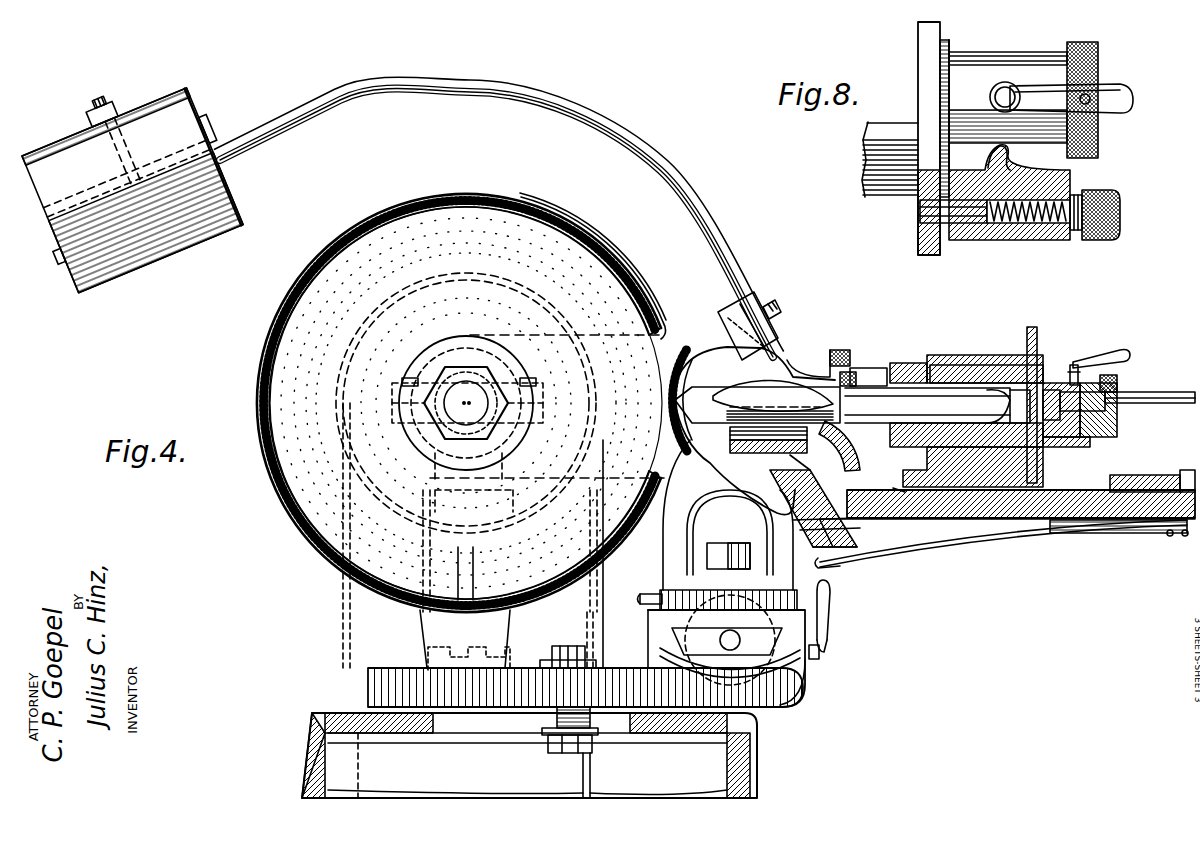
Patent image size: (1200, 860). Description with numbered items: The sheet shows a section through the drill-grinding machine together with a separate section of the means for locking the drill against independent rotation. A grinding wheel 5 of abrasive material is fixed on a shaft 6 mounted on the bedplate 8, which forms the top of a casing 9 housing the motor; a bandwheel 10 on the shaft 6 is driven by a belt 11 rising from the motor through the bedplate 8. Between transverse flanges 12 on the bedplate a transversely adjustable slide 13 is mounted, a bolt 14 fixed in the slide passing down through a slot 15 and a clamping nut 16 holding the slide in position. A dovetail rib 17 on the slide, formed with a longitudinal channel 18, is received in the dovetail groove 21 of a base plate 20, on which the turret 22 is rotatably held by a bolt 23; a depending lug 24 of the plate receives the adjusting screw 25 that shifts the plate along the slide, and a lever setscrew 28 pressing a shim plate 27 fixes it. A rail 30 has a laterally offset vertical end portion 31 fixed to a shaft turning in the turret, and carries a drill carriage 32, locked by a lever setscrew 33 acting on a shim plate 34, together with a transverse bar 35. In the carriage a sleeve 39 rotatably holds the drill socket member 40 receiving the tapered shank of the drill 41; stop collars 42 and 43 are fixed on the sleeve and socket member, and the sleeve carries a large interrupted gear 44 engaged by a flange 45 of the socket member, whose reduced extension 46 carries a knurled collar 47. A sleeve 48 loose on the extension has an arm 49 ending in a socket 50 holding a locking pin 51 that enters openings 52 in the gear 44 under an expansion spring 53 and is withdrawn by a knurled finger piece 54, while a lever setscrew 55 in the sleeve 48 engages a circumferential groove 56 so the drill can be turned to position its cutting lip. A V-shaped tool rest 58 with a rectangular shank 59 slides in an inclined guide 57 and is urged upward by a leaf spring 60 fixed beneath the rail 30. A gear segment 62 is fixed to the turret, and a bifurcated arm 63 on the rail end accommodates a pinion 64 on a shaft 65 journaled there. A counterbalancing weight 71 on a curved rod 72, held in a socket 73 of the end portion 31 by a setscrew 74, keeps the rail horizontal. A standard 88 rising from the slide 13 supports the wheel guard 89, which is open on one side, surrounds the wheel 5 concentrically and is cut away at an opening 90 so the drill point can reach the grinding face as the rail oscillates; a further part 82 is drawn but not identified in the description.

In FIG. 4, the grinding wheel 5 is at (612, 301).
In FIG. 4, the shaft 6 is at (471, 392).
In FIG. 4, the bedplate 8 is at (748, 730).
In FIG. 4, the casing 9 is at (722, 772).
In FIG. 4, the bandwheel 10 is at (596, 426).
In FIG. 4, the driving band or belt 11 is at (589, 777).
In FIG. 4, the flanges 12 is at (402, 714).
In FIG. 4, the slide 13 is at (387, 689).
In FIG. 4, the bolt 14 is at (558, 722).
In FIG. 4, the slot 15 is at (477, 724).
In FIG. 4, the clamping nut 16 is at (563, 650).
In FIG. 4, the dovetail rib 17 is at (790, 663).
In FIG. 4, the longitudinal channel 18 is at (692, 654).
In FIG. 4, the base plate 20 is at (828, 604).
In FIG. 4, the dovetail groove 21 is at (832, 628).
In FIG. 4, the turret 22 is at (670, 551).
In FIG. 4, the bolt 23 is at (719, 550).
In FIG. 4, the depending lug 24 is at (806, 674).
In FIG. 4, the adjusting screw 25 is at (726, 651).
In FIG. 4, the shim plate 27 is at (820, 655).
In FIG. 4, the lever setscrew 28 is at (830, 580).
In FIG. 4, the rail 30 is at (1036, 519).
In FIG. 4, the end portion of rail 31 is at (754, 431).
In FIG. 4, the drill carriage 32 is at (990, 470).
In FIG. 4, the lever setscrew 33 is at (953, 524).
In FIG. 4, the shim plate 34 is at (910, 521).
In FIG. 4, the transverse bar 35 is at (1175, 476).
In FIG. 4, the sleeve 39 is at (973, 372).
In FIG. 4, the drill receiving socket member 40 is at (947, 365).
In FIG. 4, the drill 41 is at (757, 401).
In FIG. 4, the stop collar 42 is at (912, 362).
In FIG. 4, the stop collar 43 is at (852, 360).
In FIG. 4, the interrupted gear 44 is at (1037, 345).
In FIG. 8, the interrupted gear 44 is at (918, 253).
In FIG. 4, the flange 45 is at (1055, 432).
In FIG. 8, the flange 45 is at (918, 22).
In FIG. 4, the reduced end 46 is at (1112, 421).
In FIG. 4, the knurled collar 47 is at (1118, 383).
In FIG. 8, the knurled collar 47 is at (1100, 60).
In FIG. 4, the sleeve 48 is at (1100, 438).
In FIG. 8, the sleeve 48 is at (1020, 58).
In FIG. 8, the radially projecting arm 49 is at (992, 150).
In FIG. 8, the elongated socket 50 is at (1030, 224).
In FIG. 8, the locking pin 51 is at (968, 243).
In FIG. 8, the openings 52 is at (919, 215).
In FIG. 8, the expansion spring 53 is at (1080, 200).
In FIG. 8, the knurled head 54 is at (1112, 196).
In FIG. 4, the lever setscrew 55 is at (1092, 352).
In FIG. 8, the lever setscrew 55 is at (1120, 96).
In FIG. 4, the circumferential groove 56 is at (1083, 448).
In FIG. 4, the inclined guide 57 is at (776, 476).
In FIG. 4, the tool rest 58 is at (736, 441).
In FIG. 4, the rectangular shank 59 is at (824, 534).
In FIG. 4, the leaf spring 60 is at (1053, 534).
In FIG. 4, the gear segment 62 is at (858, 452).
In FIG. 4, the arm 63 is at (822, 360).
In FIG. 4, the pinion 64 is at (846, 372).
In FIG. 4, the shaft 65 is at (1162, 404).
In FIG. 4, the counterbalancing weight 71 is at (127, 179).
In FIG. 4, the curved rod 72 is at (665, 168).
In FIG. 4, the socket 73 is at (752, 296).
In FIG. 4, the setscrew 74 is at (778, 304).
In FIG. 4, the pin 82 is at (643, 605).
In FIG. 4, the standard 88 is at (437, 625).
In FIG. 4, the wheel guard 89 is at (294, 526).
In FIG. 4, the slot 90 is at (668, 335).